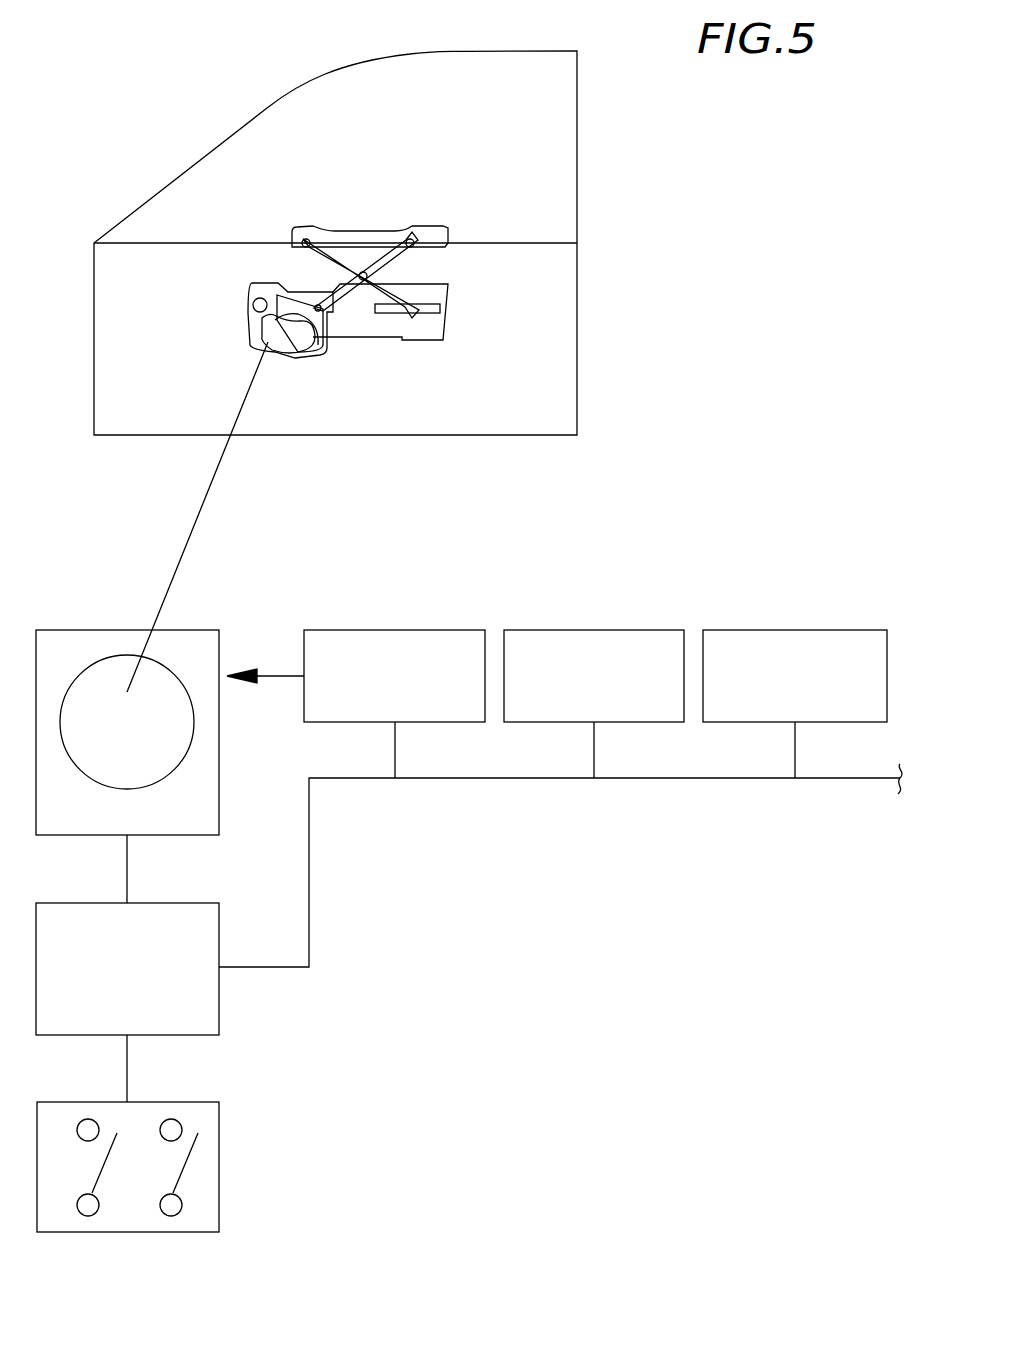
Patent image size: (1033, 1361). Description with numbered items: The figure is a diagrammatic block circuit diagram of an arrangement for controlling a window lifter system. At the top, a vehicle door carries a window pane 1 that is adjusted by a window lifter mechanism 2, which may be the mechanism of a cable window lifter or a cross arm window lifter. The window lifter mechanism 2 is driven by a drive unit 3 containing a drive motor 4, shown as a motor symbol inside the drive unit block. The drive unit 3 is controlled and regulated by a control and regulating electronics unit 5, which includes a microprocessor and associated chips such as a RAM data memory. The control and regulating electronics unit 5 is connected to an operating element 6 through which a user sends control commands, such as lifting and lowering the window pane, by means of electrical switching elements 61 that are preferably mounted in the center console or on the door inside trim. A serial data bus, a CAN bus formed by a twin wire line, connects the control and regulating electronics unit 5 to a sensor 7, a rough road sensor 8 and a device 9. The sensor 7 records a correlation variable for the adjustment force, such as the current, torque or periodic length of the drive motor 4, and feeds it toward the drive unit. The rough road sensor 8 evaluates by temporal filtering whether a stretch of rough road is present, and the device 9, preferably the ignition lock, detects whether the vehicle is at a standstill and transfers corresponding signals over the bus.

The window pane 1 is at (530, 158).
The window lifter mechanism 2 is at (380, 272).
The drive unit 3 is at (187, 809).
The drive motor 4 is at (156, 661).
The control and regulating electronics unit 5 is at (172, 903).
The operating element 6 is at (149, 1168).
The electrical switching elements 61 is at (87, 1216).
The sensor 7 is at (395, 630).
The rough road sensor 8 is at (595, 630).
The device 9 is at (795, 630).